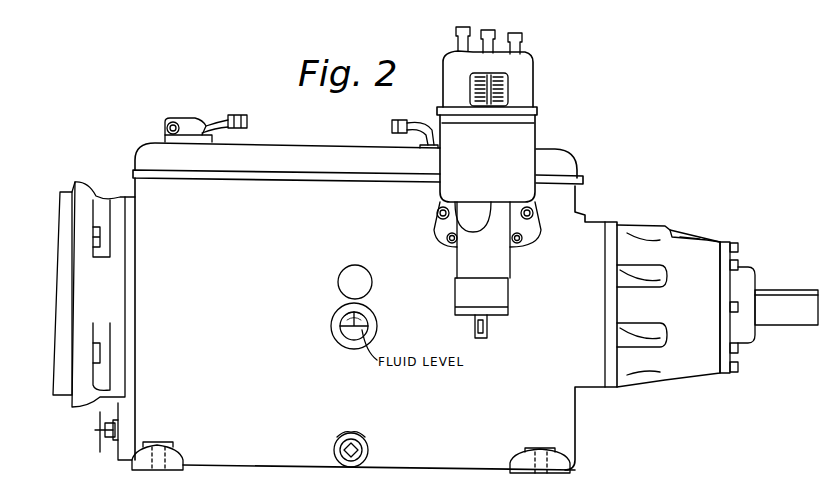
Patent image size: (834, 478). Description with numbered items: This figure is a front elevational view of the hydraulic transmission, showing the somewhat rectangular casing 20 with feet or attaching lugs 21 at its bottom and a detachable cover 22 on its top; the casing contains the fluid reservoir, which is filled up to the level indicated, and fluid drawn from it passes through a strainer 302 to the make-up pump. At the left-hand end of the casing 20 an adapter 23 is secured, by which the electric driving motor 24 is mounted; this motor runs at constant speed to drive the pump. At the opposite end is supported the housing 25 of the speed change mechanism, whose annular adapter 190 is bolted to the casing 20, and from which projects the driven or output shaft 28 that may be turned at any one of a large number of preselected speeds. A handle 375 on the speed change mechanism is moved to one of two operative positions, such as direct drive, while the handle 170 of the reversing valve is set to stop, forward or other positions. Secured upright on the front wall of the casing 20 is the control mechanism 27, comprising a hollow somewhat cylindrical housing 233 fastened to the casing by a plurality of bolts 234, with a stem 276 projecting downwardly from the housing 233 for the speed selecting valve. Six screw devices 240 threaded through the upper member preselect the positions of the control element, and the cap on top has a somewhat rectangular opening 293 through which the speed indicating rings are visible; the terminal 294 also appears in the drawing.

The casing 20 is at (280, 196).
The detachable cover 22 is at (253, 153).
The electric driving motor 24 is at (60, 190).
The adapter 23 is at (105, 200).
The strainer 302 is at (100, 452).
The feet or attaching lugs 21 is at (178, 468).
The handle of the reversing valve 170 is at (213, 119).
The handle 375 is at (421, 120).
The control mechanism 27 is at (540, 132).
The rectangular opening 293 is at (500, 88).
The terminal post 294 is at (457, 31).
The screw devices 240 is at (523, 47).
The cylindrical housing 233 is at (517, 159).
The bolts 234 is at (533, 216).
The stem 276 is at (487, 328).
The annular adapter 190 is at (596, 228).
The housing 25 is at (657, 224).
The output shaft 28 is at (763, 290).